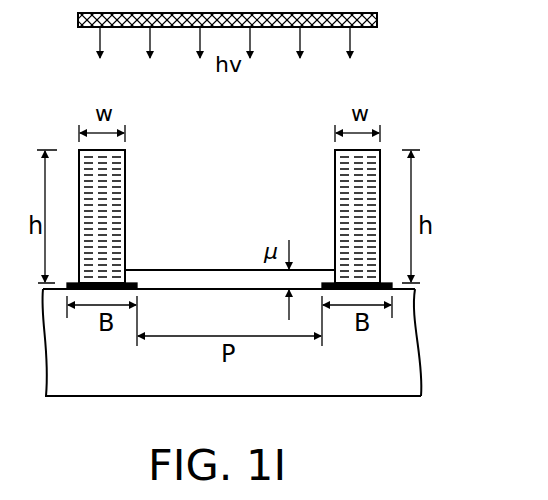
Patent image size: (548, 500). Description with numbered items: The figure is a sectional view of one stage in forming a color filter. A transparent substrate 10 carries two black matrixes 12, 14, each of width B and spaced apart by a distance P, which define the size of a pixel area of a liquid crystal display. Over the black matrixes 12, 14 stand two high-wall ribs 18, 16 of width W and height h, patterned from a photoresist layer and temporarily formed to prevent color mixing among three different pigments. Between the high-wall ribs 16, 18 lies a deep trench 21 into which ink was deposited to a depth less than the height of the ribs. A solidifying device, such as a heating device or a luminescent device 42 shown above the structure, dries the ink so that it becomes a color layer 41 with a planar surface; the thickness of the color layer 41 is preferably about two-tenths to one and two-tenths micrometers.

The light source 42 is at (378, 19).
The deep trench 21 is at (231, 165).
The high-wall rib 18 is at (125, 174).
The high-wall rib 16 is at (335, 172).
The black matrix 12 is at (128, 283).
The black matrix 14 is at (327, 283).
The color layer 41 is at (211, 280).
The transparent substrate 10 is at (378, 387).